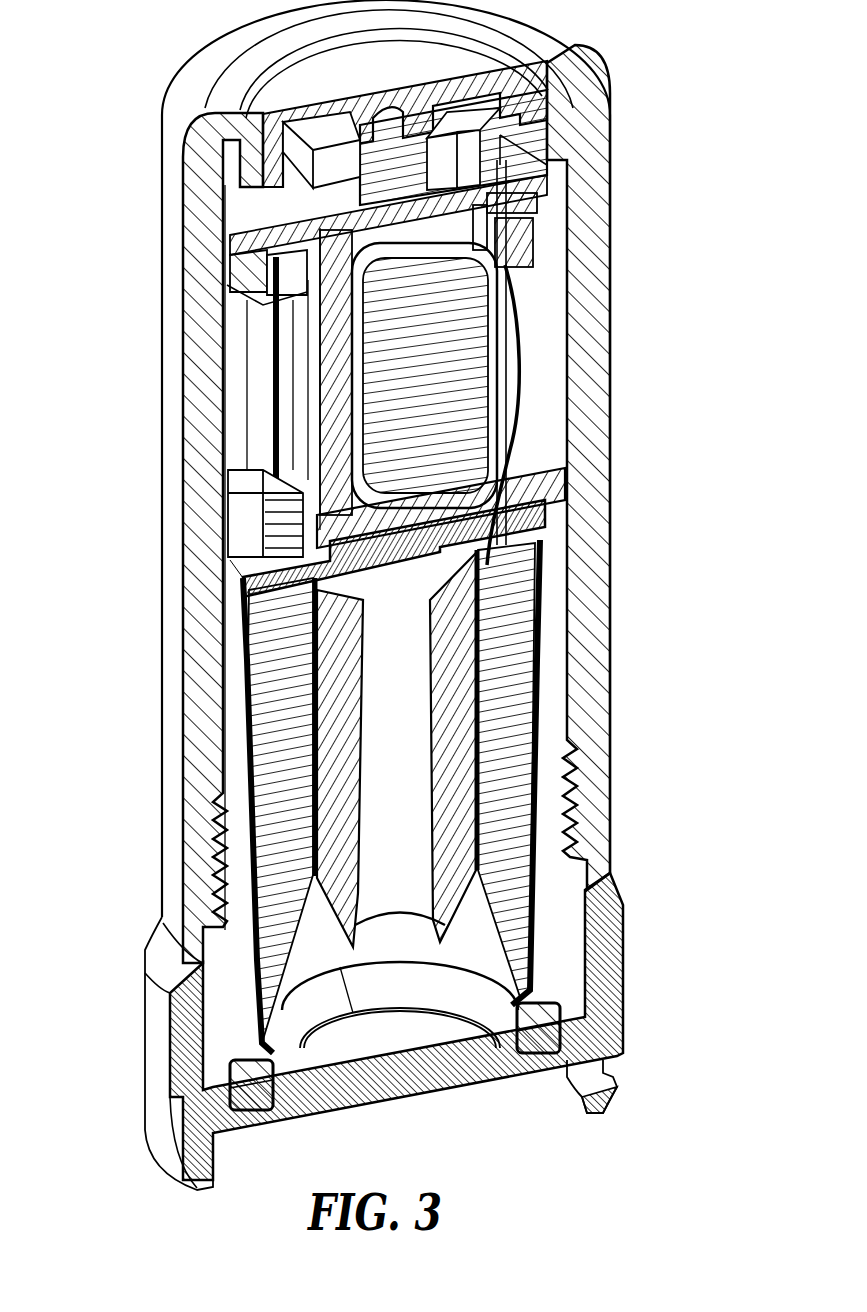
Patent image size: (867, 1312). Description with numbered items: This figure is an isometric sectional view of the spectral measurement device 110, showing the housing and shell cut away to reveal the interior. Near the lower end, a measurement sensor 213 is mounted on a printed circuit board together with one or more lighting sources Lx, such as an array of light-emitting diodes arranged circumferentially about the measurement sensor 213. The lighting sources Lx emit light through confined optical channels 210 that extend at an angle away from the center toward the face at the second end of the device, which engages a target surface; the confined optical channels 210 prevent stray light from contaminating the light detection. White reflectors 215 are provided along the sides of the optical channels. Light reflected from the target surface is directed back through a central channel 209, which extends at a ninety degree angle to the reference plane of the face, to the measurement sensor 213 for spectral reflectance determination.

The spectral measurement device 110 is at (104, 118).
The central channel 209 is at (407, 890).
The confined optical channels 210 is at (505, 820).
The measurement sensor 213 is at (420, 590).
The white reflectors 215 is at (243, 706).
The lighting sources Lx is at (275, 612).